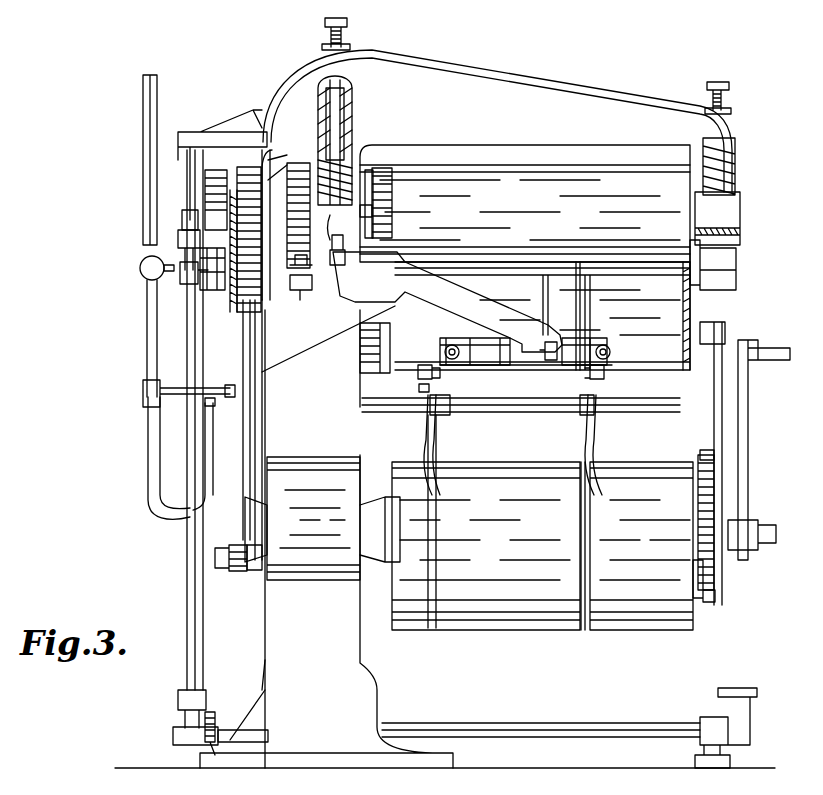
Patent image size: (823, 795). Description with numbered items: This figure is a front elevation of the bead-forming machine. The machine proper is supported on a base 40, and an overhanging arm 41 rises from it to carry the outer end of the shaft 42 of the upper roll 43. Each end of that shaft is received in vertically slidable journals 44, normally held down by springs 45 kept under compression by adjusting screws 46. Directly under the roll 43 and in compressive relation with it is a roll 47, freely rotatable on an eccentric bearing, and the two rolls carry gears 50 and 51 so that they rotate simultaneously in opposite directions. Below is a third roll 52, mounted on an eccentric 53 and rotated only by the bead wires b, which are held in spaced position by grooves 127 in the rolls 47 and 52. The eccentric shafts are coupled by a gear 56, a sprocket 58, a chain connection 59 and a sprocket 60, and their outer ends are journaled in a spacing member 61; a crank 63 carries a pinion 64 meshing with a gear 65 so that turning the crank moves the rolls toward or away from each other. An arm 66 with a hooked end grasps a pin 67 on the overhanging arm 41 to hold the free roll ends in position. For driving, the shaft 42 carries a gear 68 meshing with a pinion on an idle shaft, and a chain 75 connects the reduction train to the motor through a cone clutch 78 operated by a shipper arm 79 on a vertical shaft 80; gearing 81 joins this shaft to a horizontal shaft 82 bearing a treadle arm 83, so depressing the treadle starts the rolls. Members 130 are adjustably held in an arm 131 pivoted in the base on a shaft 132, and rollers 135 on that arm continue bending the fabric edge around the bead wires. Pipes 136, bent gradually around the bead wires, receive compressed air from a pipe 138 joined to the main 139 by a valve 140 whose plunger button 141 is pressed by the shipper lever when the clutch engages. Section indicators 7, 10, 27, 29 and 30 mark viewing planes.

The gear 7 is at (262, 178).
The section line indicator 10 is at (462, 341).
The section line indicator 27 is at (400, 164).
The section line indicator 29 is at (285, 148).
The shaft 30 is at (227, 184).
The base 40 is at (326, 539).
The overhanging arm 41 is at (510, 72).
The shaft 42 is at (378, 210).
The roll 43 is at (512, 175).
The journals 44 is at (728, 205).
The springs 45 is at (340, 145).
The adjusting screws 46 is at (343, 40).
The roll 47 is at (662, 288).
The gear 50 is at (378, 183).
The gear 51 is at (362, 375).
The third roll 52 is at (660, 640).
The eccentric 53 is at (702, 580).
The gear 56 is at (258, 575).
The sprocket 58 is at (245, 575).
The chain connection 59 is at (252, 440).
The sprocket 60 is at (275, 362).
The spacing member 61 is at (712, 385).
The crank 63 is at (750, 398).
The pinion 64 is at (700, 455).
The gear 65 is at (715, 570).
The arm 66 is at (700, 300).
The pin 67 is at (712, 272).
The gear 68 is at (320, 125).
The chain 75 is at (230, 365).
The clutch 78 is at (200, 270).
The shipper arm 79 is at (183, 237).
The vertical shaft 80 is at (190, 558).
The gearing 81 is at (171, 715).
The horizontal shaft 82 is at (512, 738).
The treadle arm 83 is at (735, 690).
The grooves 127 is at (583, 288).
The members 130 is at (470, 368).
The arm 131 is at (412, 312).
The shaft 132 is at (316, 269).
The rollers 135 is at (425, 395).
The pipes 136 is at (426, 440).
The pipe 138 is at (486, 412).
The main 139 is at (144, 195).
The valve 140 is at (140, 264).
The button 141 is at (180, 280).
The bead wires b is at (445, 630).